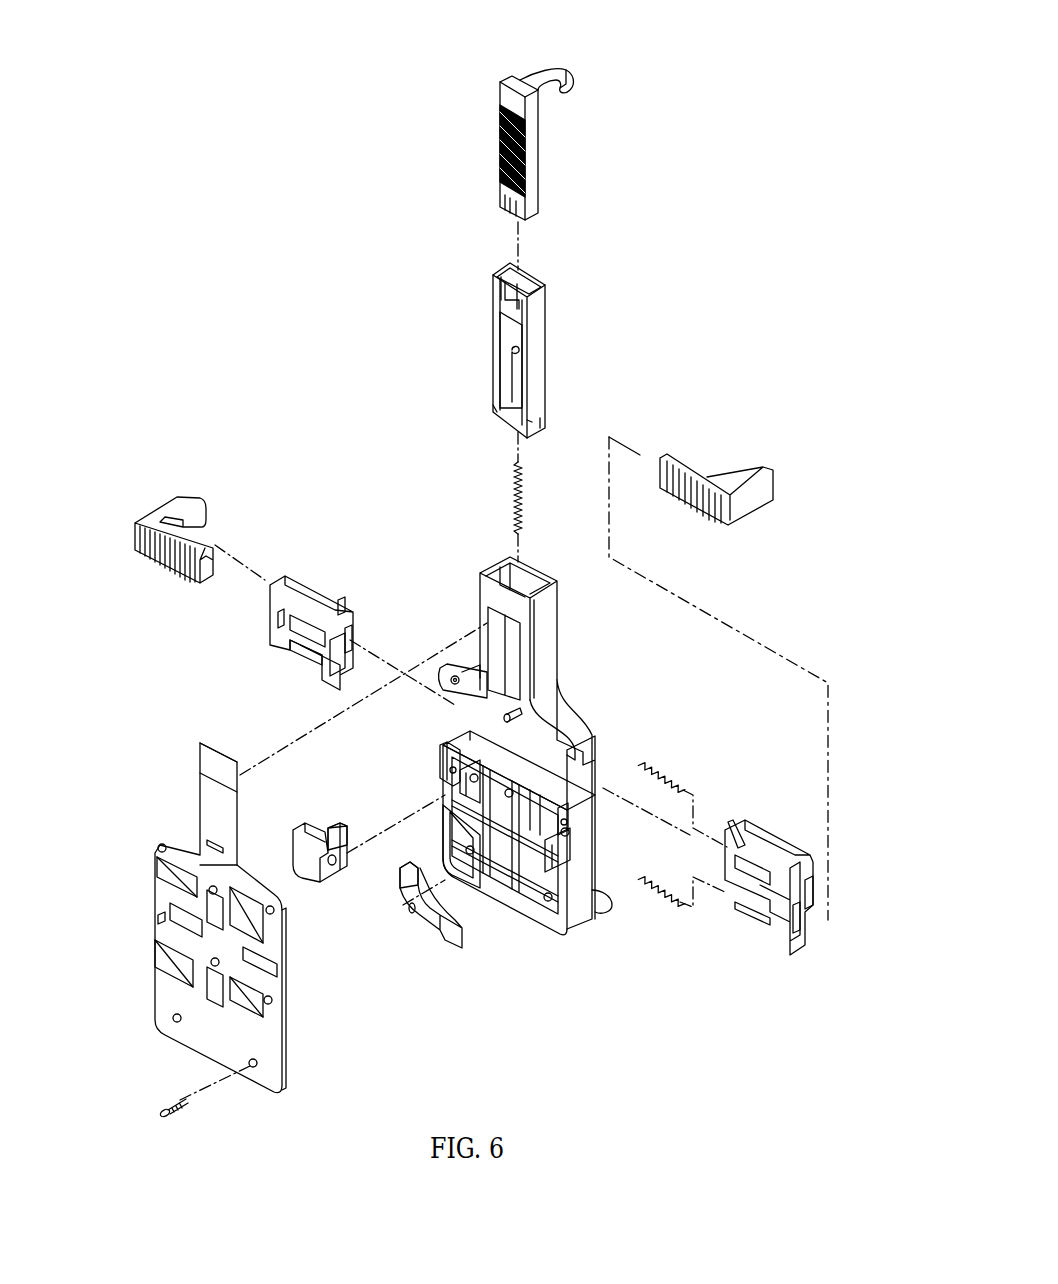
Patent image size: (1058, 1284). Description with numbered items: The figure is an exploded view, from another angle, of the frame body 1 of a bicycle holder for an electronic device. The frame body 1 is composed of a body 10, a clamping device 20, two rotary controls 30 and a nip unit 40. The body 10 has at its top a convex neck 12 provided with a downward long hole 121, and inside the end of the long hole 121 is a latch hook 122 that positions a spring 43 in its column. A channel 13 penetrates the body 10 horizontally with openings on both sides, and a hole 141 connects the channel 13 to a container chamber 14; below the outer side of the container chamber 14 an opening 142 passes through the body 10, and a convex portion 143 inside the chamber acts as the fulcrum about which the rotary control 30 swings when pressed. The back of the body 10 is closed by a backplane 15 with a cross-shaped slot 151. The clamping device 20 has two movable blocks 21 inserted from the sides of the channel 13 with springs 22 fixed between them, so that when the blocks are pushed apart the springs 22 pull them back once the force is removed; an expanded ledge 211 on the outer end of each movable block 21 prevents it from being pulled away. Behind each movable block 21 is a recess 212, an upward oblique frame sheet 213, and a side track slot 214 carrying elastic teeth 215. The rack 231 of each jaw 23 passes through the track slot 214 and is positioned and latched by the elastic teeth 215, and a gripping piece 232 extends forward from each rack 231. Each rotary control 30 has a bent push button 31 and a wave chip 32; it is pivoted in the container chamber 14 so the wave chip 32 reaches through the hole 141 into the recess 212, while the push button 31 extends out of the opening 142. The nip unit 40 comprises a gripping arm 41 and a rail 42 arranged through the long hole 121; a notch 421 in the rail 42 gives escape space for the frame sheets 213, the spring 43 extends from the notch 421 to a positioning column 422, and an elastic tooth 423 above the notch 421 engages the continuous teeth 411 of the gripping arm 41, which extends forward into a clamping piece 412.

The frame body 1 is at (715, 205).
The body 10 is at (525, 918).
The convex neck 12 is at (488, 625).
The long hole 121 is at (505, 575).
The latch hook 122 is at (540, 680).
The channel 13 is at (570, 770).
The container chamber 14 is at (463, 828).
The hole 141 is at (478, 765).
The opening 142 is at (445, 787).
The convex portion 143 is at (453, 772).
The backplane 15 is at (170, 845).
The cross-shaped slot 151 is at (160, 918).
The clamping device 20 is at (160, 645).
The movable block 21 is at (325, 592).
The expanded ledge 211 is at (287, 578).
The recess 212 is at (300, 655).
The frame sheet 213 is at (340, 610).
The track slot 214 is at (350, 640).
The elastic teeth 215 is at (275, 617).
The spring 22 is at (663, 775).
The jaw 23 is at (135, 510).
The rack 231 is at (148, 558).
The gripping piece 232 is at (168, 503).
The rotary control 30 is at (300, 828).
The push button 31 is at (292, 857).
The wave chip 32 is at (330, 822).
The nip unit 40 is at (488, 78).
The gripping arm 41 is at (538, 170).
The continuous teeth 411 is at (500, 142).
The clamping piece 412 is at (552, 68).
The rail 42 is at (538, 396).
The notch 421 is at (518, 340).
The positioning column 422 is at (512, 352).
The elastic tooth 423 is at (500, 292).
The spring 43 is at (525, 507).